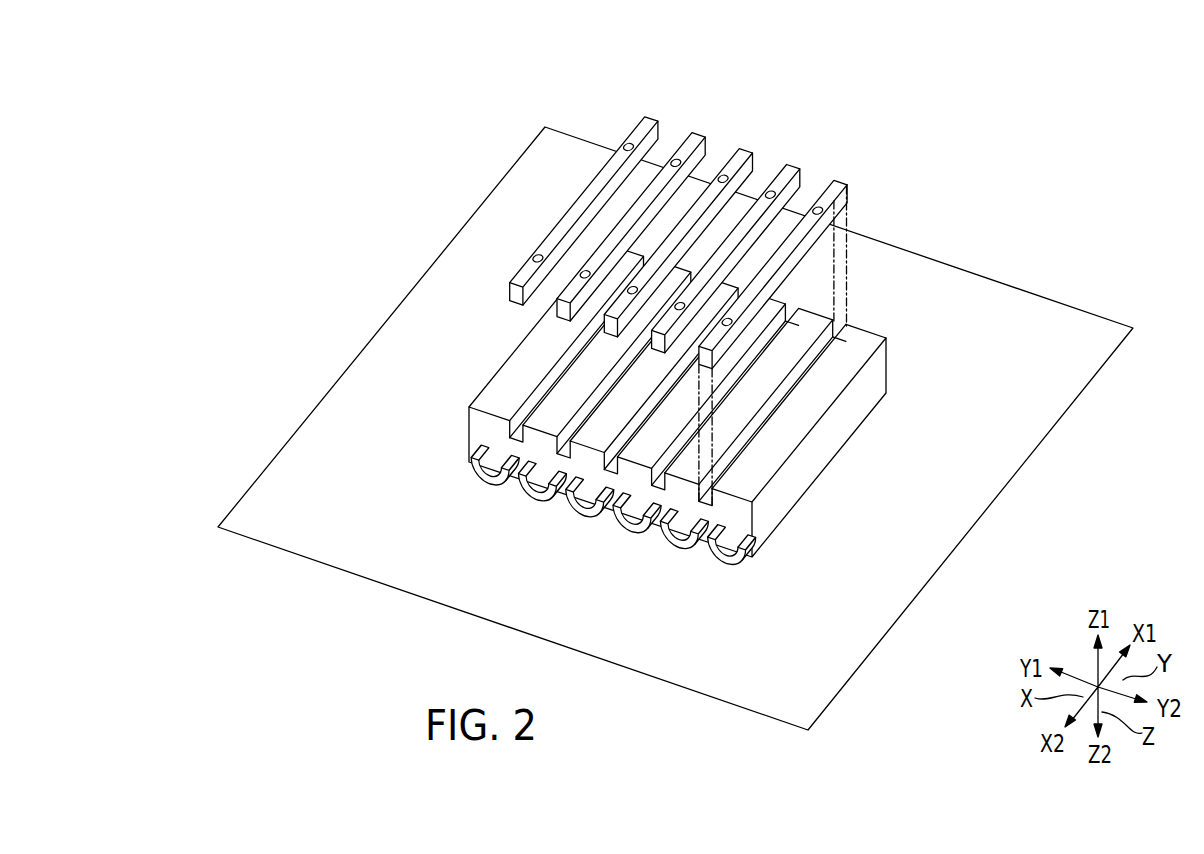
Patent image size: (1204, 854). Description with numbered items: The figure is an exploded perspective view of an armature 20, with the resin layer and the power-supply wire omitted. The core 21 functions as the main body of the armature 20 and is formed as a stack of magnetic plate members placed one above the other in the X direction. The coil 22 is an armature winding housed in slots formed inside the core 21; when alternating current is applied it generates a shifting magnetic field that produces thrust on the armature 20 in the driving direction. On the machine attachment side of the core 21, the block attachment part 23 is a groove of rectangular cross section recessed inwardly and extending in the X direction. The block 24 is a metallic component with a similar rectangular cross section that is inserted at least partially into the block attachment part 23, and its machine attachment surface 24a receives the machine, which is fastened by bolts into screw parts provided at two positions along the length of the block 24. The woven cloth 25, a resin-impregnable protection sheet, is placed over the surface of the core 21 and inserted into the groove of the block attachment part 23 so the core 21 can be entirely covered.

The armature 20 is at (755, 96).
The core 21 is at (857, 341).
The coil 22 is at (720, 562).
The block attachment part 23 is at (845, 300).
The block 24 is at (840, 186).
The machine attachment surface 24a is at (822, 170).
The woven cloth 25 is at (1060, 322).